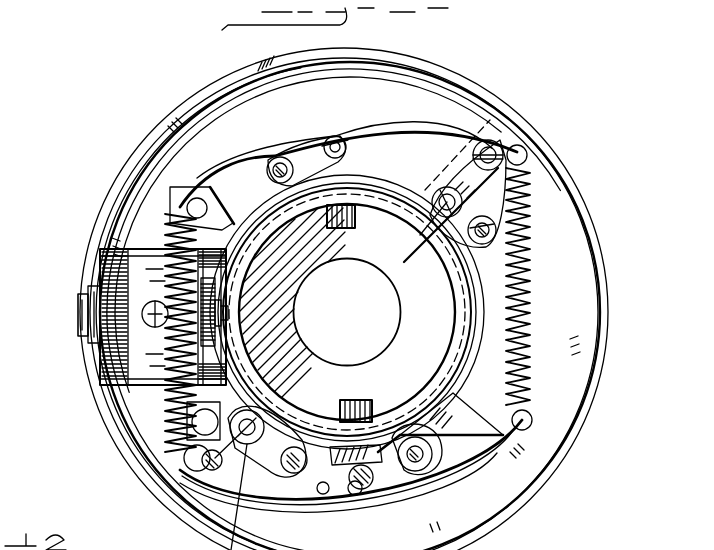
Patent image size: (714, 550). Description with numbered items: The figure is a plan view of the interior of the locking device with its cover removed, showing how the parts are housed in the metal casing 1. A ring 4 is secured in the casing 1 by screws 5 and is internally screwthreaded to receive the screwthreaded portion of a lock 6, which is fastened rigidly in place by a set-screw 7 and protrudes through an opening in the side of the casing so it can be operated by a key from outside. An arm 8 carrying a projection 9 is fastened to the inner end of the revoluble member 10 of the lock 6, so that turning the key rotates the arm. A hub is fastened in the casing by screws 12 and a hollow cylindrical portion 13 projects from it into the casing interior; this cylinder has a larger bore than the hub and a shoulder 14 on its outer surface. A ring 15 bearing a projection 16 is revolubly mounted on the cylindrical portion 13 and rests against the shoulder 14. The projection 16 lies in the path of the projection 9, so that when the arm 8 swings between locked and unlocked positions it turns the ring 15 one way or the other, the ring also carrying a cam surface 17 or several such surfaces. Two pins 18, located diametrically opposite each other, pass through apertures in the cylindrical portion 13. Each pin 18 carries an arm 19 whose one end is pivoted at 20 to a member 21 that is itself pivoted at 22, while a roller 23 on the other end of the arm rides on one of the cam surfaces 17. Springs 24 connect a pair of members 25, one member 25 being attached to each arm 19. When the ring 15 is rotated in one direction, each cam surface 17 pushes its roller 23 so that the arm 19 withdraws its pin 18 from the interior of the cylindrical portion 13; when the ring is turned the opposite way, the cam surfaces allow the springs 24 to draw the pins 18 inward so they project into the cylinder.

The casing 1 is at (605, 307).
The ring 4 is at (163, 317).
The screws 5 is at (176, 203).
The lock 6 is at (104, 318).
The set-screw 7 is at (152, 317).
The arm 8 is at (214, 318).
The projection 9 is at (213, 302).
The revoluble member 10 is at (80, 312).
The screws 12 is at (276, 158).
The hollow cylindrical portion 13 is at (455, 304).
The shoulder 14 is at (468, 326).
The ring 15 is at (460, 366).
The projection 16 is at (222, 332).
The cam surface 17 is at (290, 184).
The pins 18 is at (353, 222).
The arm 19 is at (388, 124).
The pivot 20 is at (492, 150).
The member 21 is at (478, 190).
The pivot 22 is at (443, 206).
The roller 23 is at (332, 137).
The springs 24 is at (533, 316).
The members 25 is at (235, 150).